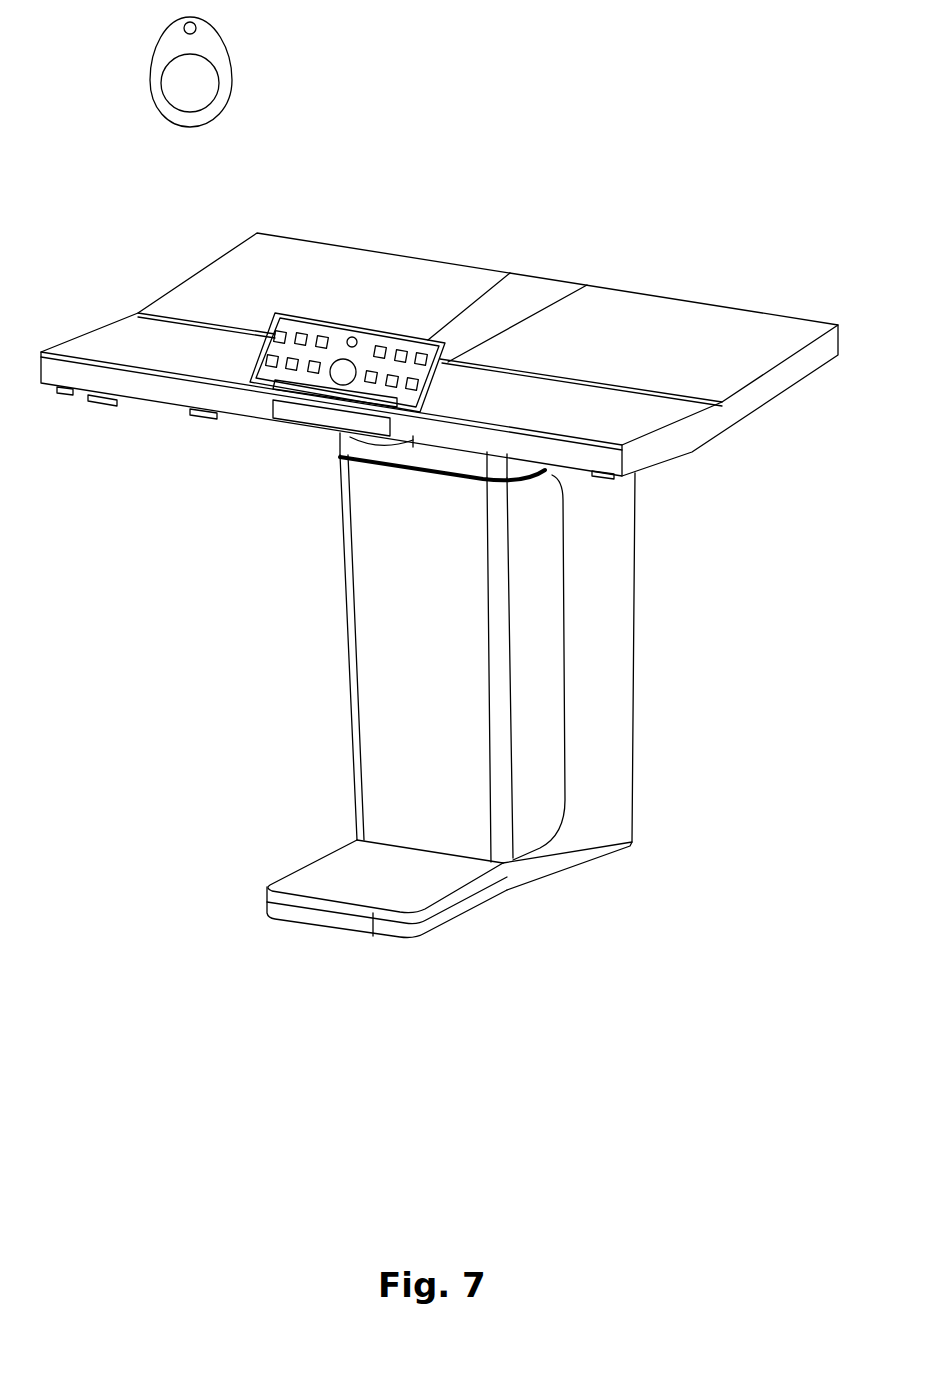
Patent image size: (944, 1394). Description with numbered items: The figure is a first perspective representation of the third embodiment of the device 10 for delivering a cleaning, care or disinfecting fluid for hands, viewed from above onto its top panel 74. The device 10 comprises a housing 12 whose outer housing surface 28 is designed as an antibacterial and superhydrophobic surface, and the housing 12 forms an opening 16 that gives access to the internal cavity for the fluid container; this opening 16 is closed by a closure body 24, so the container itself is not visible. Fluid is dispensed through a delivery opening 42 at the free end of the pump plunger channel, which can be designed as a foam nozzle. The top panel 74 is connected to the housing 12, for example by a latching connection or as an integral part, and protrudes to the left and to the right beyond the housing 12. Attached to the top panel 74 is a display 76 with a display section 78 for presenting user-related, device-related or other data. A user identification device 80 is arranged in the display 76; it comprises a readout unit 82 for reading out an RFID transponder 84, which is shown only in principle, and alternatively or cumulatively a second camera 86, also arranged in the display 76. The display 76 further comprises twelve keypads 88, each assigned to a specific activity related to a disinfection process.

The device 10 is at (742, 249).
The housing 12 is at (643, 681).
The opening 16 is at (305, 562).
The closure body 24 is at (372, 697).
The outer housing surface 28 is at (610, 713).
The delivery opening 42 is at (357, 462).
The top panel 74 is at (764, 398).
The display 76 is at (277, 364).
The display section 78 is at (243, 387).
The user identification device 80 is at (345, 374).
The readout unit 82 is at (340, 385).
The RFID transponder 84 is at (233, 77).
The second camera 86 is at (354, 337).
The keypads 88 is at (300, 335).